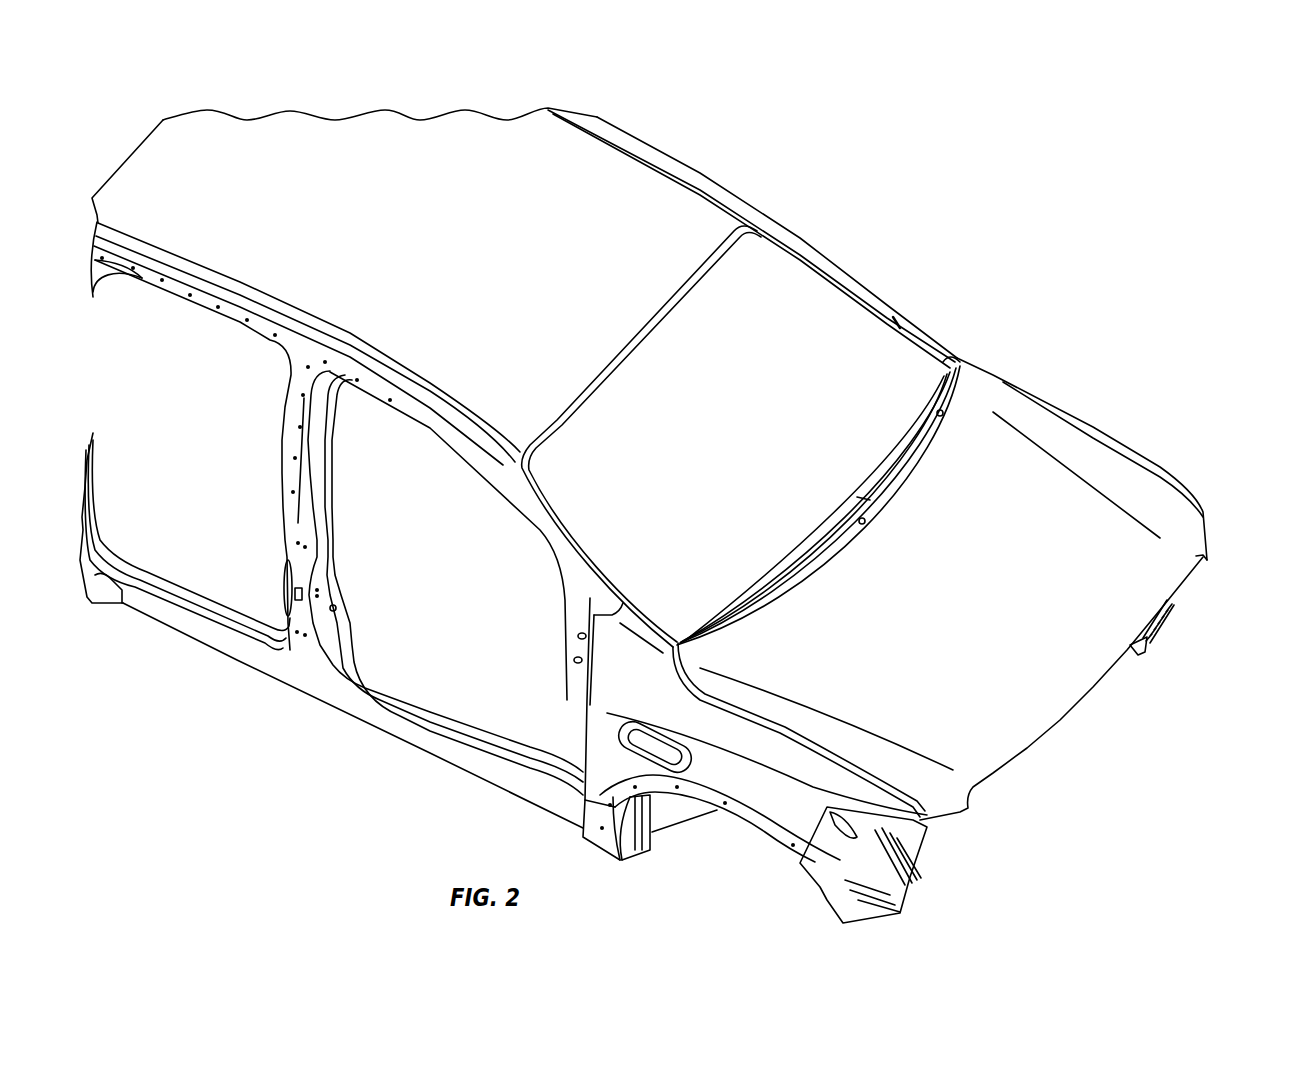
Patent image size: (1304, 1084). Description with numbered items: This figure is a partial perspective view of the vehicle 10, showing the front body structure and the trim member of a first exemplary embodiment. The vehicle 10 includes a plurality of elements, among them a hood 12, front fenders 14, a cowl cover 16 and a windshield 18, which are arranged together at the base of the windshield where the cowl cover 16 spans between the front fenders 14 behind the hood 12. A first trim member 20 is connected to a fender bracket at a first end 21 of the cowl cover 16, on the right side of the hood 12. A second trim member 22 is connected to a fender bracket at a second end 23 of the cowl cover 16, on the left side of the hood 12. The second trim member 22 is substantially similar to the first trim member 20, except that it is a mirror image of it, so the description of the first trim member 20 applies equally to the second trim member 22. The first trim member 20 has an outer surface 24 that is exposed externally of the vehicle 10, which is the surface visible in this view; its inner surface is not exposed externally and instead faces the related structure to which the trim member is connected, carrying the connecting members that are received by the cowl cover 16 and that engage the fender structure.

The vehicle 10 is at (853, 233).
The hood 12 is at (1172, 571).
The front fenders 14 is at (1095, 423).
The cowl cover 16 is at (882, 485).
The windshield 18 is at (763, 263).
The first trim member 20 is at (928, 328).
The first end 21 is at (932, 390).
The second trim member 22 is at (655, 620).
The second end 23 is at (693, 632).
The outer surface 24 is at (922, 356).